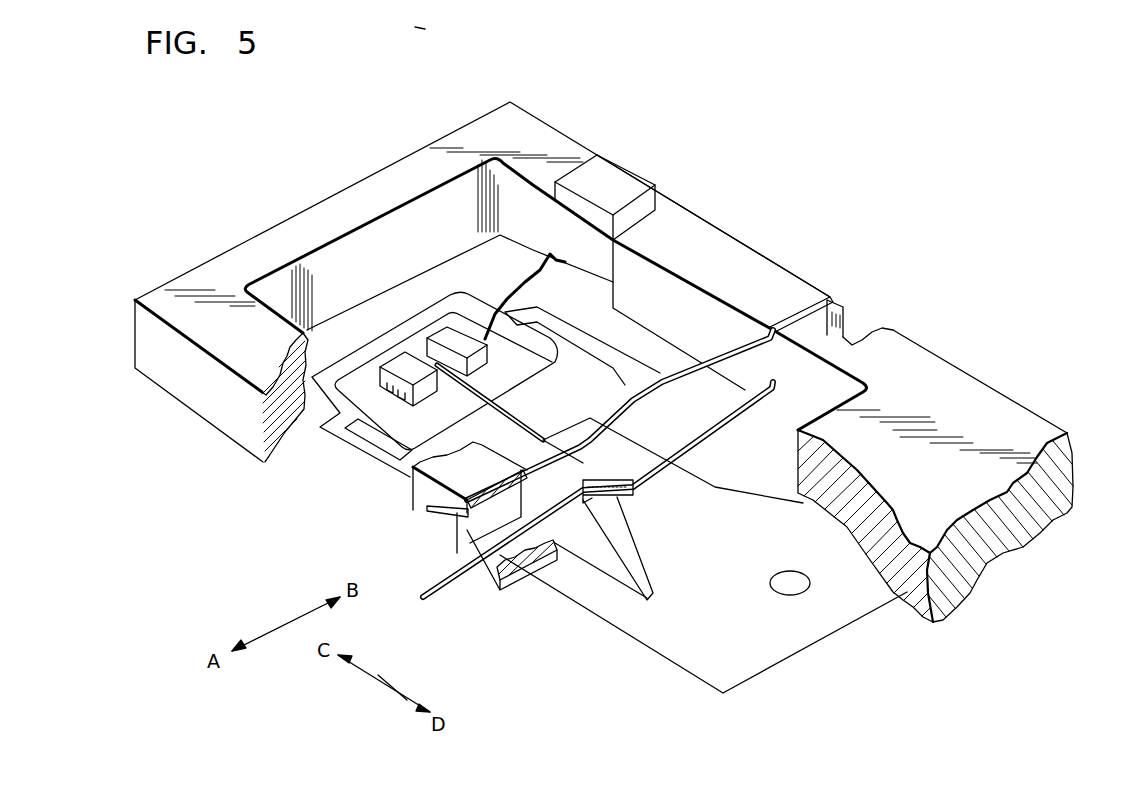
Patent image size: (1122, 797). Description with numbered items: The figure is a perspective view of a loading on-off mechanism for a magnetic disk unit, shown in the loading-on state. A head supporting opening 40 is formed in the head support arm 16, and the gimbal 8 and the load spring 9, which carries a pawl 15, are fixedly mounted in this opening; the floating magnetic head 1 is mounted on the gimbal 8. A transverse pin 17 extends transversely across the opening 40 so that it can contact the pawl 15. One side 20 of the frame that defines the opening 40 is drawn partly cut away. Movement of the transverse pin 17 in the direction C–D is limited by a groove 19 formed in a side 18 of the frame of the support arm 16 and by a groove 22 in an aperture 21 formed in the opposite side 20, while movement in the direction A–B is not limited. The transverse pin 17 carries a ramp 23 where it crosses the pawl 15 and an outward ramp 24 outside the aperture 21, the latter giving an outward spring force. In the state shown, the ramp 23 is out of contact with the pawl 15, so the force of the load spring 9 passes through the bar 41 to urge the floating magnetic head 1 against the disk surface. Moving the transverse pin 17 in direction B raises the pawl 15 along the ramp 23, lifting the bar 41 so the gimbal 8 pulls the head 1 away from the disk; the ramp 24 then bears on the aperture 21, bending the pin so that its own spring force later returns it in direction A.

The floating magnetic head 1 is at (443, 340).
The gimbal 8 is at (337, 437).
The load spring 9 is at (690, 528).
The pawl 15 is at (637, 493).
The head support arm 16 is at (980, 397).
The transverse pin 17 is at (635, 381).
The side of the frame 18 is at (785, 283).
The groove 19 is at (770, 329).
The side of the frame 20 is at (410, 487).
The aperture 21 is at (460, 532).
The groove 22 is at (457, 547).
The ramp 23 is at (613, 497).
The outward ramp 24 is at (443, 590).
The head supporting opening 40 is at (520, 182).
The bar 41 is at (500, 417).